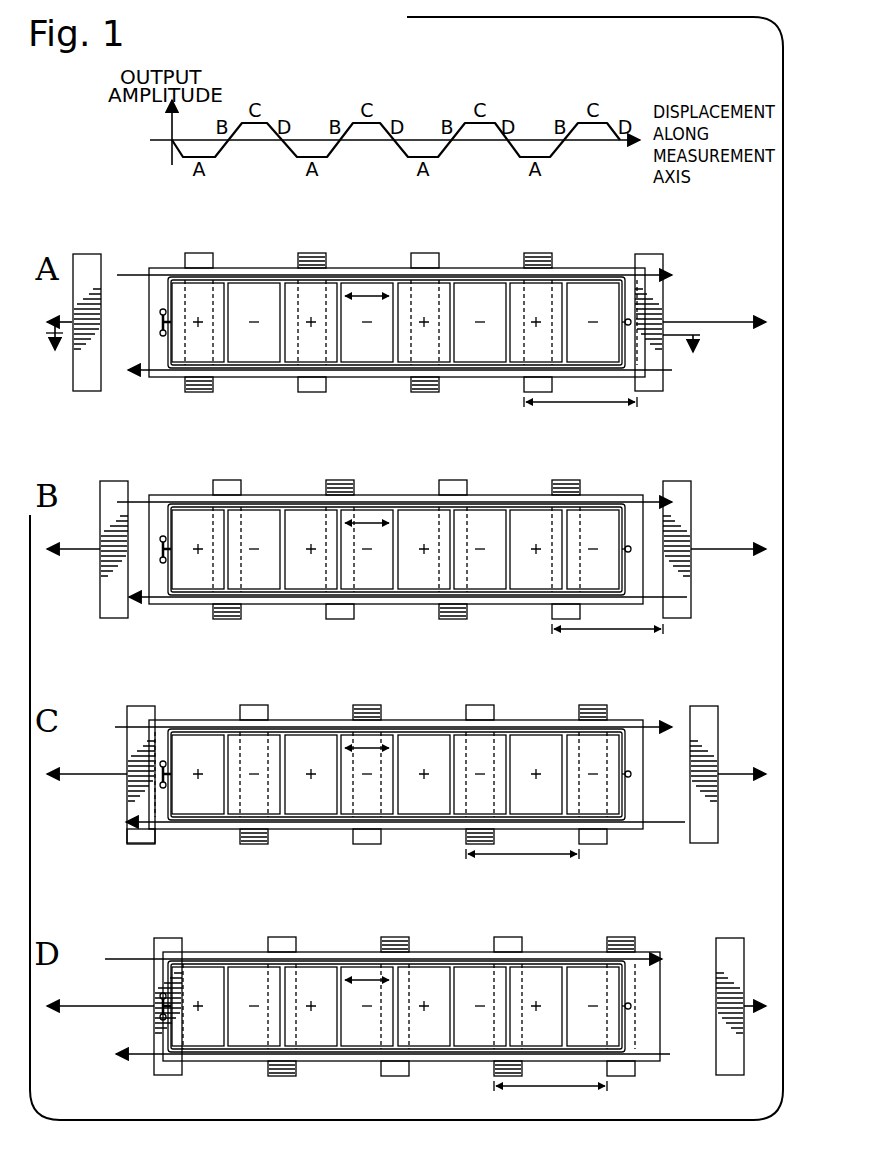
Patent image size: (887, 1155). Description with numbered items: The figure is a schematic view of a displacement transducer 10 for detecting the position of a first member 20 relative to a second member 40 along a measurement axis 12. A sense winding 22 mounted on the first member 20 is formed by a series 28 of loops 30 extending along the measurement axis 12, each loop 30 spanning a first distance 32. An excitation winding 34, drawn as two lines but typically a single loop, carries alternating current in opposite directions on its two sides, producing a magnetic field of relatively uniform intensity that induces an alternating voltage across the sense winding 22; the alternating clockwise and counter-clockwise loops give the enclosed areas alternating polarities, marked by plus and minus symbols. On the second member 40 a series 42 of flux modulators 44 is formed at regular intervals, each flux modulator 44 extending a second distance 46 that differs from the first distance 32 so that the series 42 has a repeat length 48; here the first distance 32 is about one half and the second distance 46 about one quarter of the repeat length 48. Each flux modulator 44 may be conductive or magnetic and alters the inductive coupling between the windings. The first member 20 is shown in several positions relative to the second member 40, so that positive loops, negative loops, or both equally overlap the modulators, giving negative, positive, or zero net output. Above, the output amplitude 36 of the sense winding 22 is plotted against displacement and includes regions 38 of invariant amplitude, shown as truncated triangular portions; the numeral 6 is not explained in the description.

The gap between readhead and scale 6 is at (373, 356).
The displacement transducer 10 is at (689, 253).
The measurement axis 12 is at (708, 322).
The first member 20 is at (162, 268).
The sense winding 22 is at (160, 350).
The series of loops 28 is at (498, 258).
The loop 30 is at (295, 275).
The first distance 32 is at (362, 294).
The excitation winding 34 is at (588, 275).
The output amplitude 36 is at (284, 88).
The region of invariant amplitude 38 is at (423, 157).
The second member 40 is at (41, 305).
The series of flux modulators 42 is at (447, 254).
The flux modulator 44 is at (326, 385).
The second distance 46 is at (298, 241).
The repeat length 48 is at (572, 402).